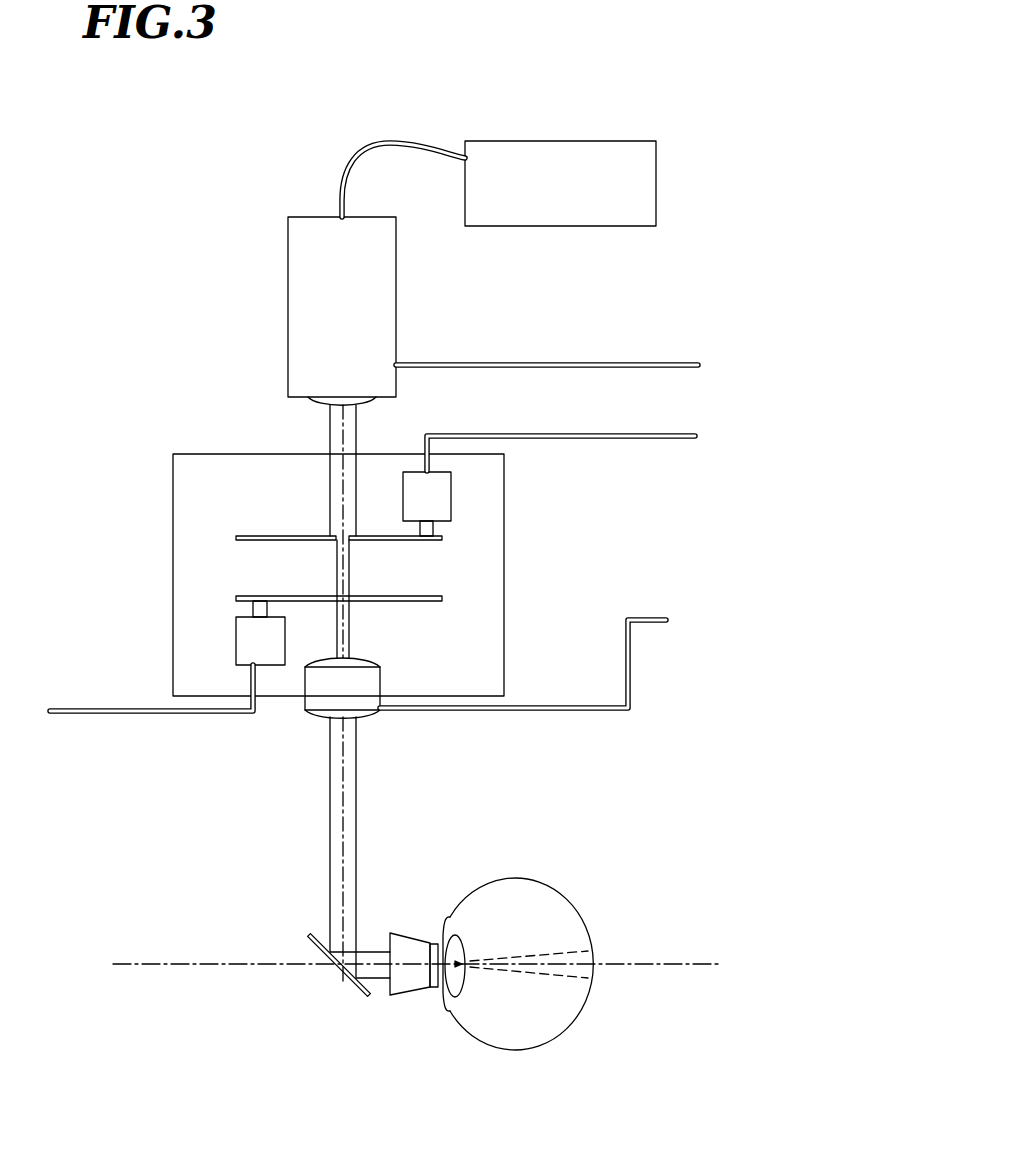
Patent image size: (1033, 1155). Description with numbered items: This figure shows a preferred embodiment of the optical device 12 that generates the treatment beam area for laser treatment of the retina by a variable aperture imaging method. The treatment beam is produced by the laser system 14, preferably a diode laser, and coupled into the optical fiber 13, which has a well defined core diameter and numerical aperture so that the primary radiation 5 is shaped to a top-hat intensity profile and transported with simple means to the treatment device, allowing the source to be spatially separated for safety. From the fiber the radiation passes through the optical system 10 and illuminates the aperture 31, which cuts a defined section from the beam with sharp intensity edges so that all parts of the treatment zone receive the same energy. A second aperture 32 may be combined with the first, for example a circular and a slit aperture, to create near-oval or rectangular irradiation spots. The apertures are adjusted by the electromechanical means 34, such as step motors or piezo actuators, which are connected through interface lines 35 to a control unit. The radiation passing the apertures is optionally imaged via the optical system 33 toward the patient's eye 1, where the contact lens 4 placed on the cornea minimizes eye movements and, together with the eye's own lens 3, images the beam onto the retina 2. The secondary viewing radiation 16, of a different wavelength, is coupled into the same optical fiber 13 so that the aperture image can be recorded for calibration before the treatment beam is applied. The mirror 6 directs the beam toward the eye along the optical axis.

The patient's eye 1 is at (562, 913).
The retina 2 is at (582, 1010).
The lens 3 is at (450, 917).
The contact lens 4 is at (408, 943).
The treatment laser radiation 5 is at (330, 810).
The mirror 6 is at (353, 983).
The optical system 10 is at (378, 398).
The optical device 12 is at (173, 488).
The optical fiber 13 is at (352, 158).
The laser system 14 is at (655, 182).
The viewing radiation 16 is at (288, 340).
The aperture 31 is at (425, 540).
The aperture 32 is at (418, 601).
The optical system 33 is at (372, 717).
The electromechanical means 34 is at (451, 484).
The interface lines 35 is at (700, 365).